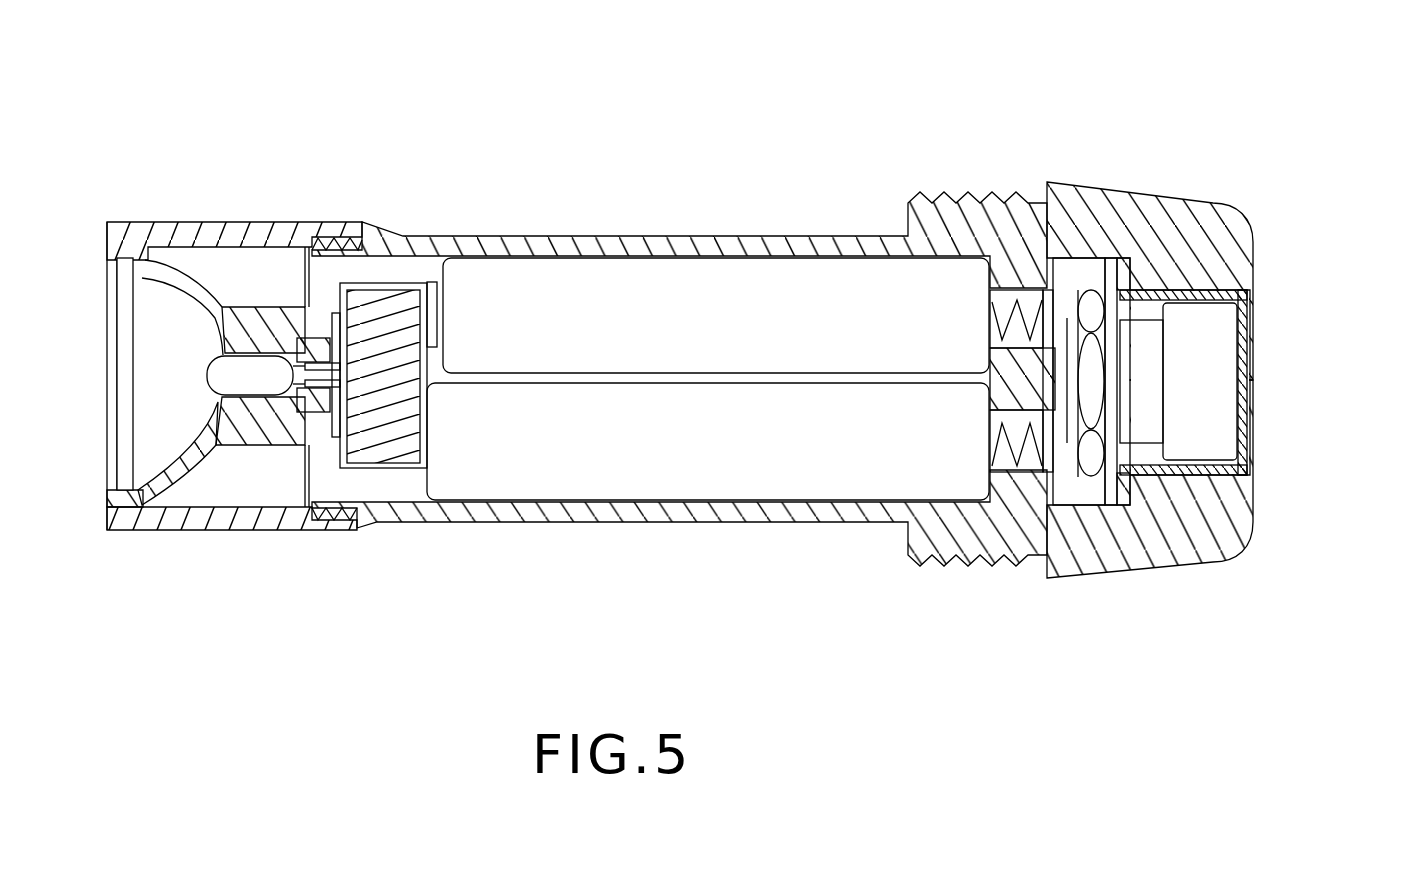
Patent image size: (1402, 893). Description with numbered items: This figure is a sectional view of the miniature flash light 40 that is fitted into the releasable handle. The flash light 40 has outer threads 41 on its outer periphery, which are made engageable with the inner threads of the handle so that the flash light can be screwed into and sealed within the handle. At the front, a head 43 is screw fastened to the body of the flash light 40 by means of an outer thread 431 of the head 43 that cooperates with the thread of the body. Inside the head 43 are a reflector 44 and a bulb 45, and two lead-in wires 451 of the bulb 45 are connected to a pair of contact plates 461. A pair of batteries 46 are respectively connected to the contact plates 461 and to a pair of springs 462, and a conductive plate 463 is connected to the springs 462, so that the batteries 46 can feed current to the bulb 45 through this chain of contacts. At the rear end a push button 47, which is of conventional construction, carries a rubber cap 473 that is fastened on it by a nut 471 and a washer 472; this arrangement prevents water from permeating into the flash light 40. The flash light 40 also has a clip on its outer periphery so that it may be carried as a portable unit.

The miniature flash light 40 is at (703, 180).
The outer threads 41 is at (962, 572).
The head 43 is at (222, 530).
The outer thread 431 is at (337, 222).
The reflector 44 is at (172, 477).
The bulb 45 is at (255, 385).
The lead-in wires 451 is at (322, 413).
The batteries 46 is at (672, 490).
The contact plates 461 is at (412, 472).
The springs 462 is at (1022, 470).
The conductive plate 463 is at (1060, 455).
The push button 47 is at (1207, 397).
The nut 471 is at (1080, 283).
The washer 472 is at (1112, 297).
The rubber cap 473 is at (1247, 322).